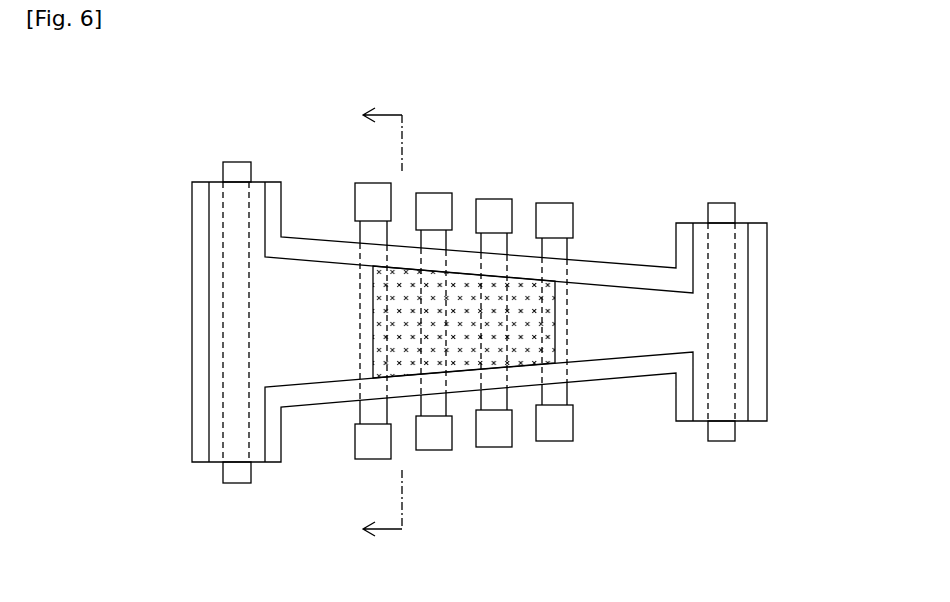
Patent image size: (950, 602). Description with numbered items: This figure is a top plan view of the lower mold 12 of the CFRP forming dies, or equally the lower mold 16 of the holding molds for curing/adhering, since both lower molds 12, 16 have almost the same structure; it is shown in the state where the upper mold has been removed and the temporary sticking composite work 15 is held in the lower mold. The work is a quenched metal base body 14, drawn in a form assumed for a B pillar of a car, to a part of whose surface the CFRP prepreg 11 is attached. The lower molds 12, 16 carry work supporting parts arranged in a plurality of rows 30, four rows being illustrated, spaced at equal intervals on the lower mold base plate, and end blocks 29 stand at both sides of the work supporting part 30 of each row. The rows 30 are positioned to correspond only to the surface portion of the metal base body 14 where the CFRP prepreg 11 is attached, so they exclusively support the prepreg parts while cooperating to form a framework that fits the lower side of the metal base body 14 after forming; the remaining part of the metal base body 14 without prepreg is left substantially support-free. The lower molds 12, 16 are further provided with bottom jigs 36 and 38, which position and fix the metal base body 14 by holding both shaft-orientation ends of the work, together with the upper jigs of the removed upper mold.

The lower mold of CFRP forming dies 12 is at (583, 138).
The lower mold of holding molds for curing/adhering 16 is at (477, 329).
The temporary sticking composite work 15 is at (477, 314).
The quenched metal base body 14 is at (277, 322).
The CFRP prepreg 11 is at (537, 320).
The end block 29 is at (367, 204).
The work supporting part 30 is at (557, 396).
The bottom jig 36 is at (237, 474).
The bottom jig 38 is at (720, 432).